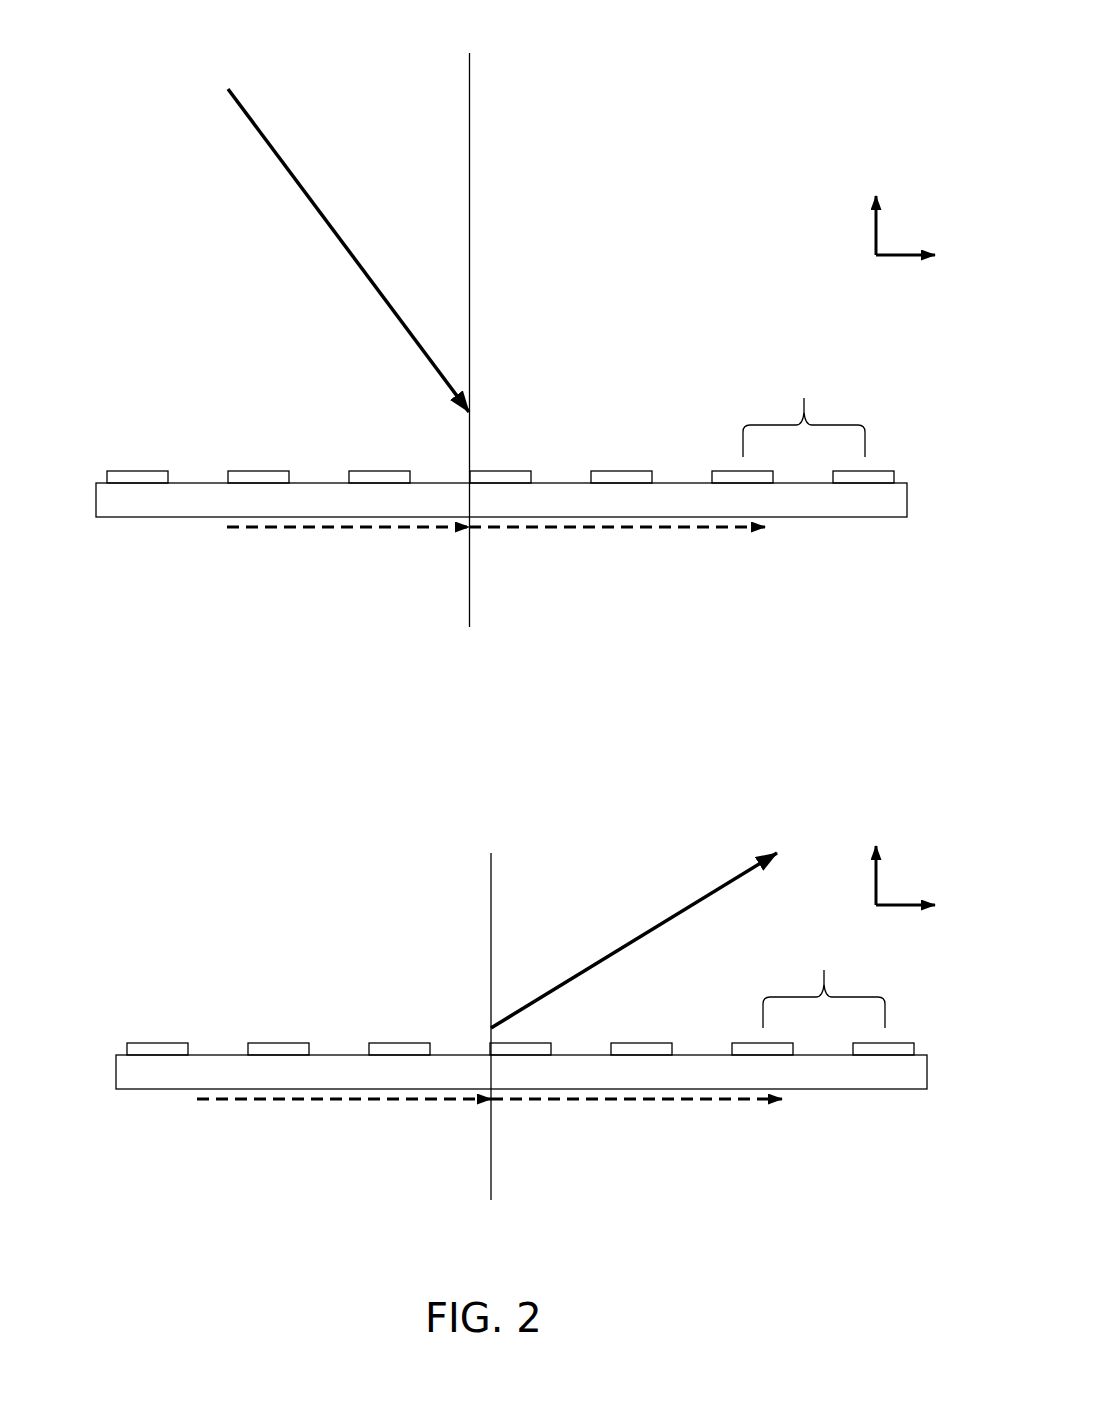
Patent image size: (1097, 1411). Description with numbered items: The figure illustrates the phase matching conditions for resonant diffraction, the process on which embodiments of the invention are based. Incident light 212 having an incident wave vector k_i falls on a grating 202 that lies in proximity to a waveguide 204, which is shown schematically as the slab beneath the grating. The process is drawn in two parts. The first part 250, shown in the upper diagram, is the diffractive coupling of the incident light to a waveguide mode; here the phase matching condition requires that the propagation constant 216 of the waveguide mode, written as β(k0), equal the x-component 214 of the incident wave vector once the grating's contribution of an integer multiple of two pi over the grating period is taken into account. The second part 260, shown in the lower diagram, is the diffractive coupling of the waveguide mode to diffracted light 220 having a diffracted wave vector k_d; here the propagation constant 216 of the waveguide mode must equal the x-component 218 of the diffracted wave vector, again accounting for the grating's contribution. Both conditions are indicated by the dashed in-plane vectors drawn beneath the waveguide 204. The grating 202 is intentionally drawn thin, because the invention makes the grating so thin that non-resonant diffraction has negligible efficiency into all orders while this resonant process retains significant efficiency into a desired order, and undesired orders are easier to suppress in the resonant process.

The grating 202 is at (223, 455).
The waveguide 204 is at (133, 505).
The incident light 212 is at (273, 155).
The x-component of the incident wave vector 214 is at (267, 528).
The propagation constant of the waveguide mode 216 is at (505, 530).
The x-component of the diffracted wave vector 218 is at (523, 1100).
The diffracted light 220 is at (618, 947).
The first part of the resonant diffraction process 250 is at (745, 150).
The second part of the resonant diffraction process 260 is at (810, 788).